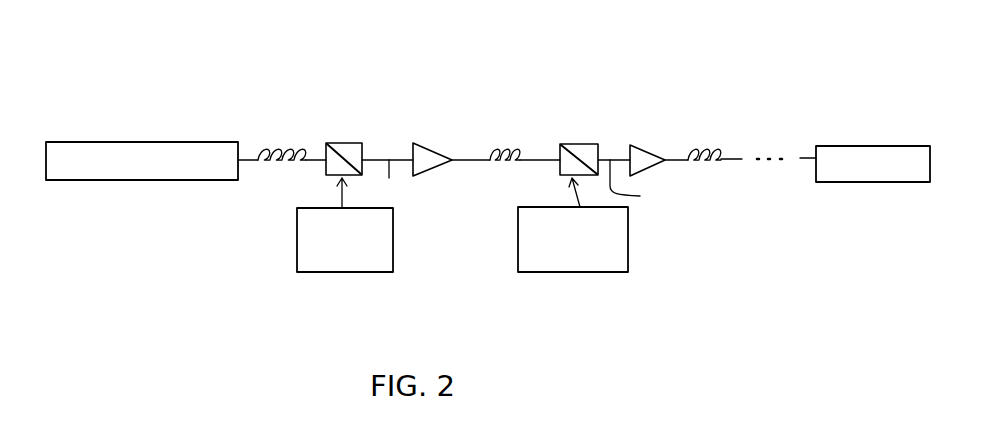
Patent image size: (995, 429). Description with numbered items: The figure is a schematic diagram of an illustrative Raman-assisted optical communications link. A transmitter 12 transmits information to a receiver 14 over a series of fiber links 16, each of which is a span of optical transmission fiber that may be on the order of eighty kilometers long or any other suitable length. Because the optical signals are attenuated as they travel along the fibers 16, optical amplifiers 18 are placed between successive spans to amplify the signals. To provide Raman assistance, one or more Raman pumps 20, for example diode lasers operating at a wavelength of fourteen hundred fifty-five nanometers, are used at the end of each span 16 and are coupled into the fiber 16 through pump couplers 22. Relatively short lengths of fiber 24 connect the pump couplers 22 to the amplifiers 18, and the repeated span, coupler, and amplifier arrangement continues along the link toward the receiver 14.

The transmitter 12 is at (160, 141).
The receiver 14 is at (843, 144).
The fiber links 16 is at (291, 135).
The optical amplifiers 18 is at (427, 143).
The Raman pumps 20 is at (365, 272).
The pump couplers 22 is at (350, 143).
The fiber 24 is at (533, 184).